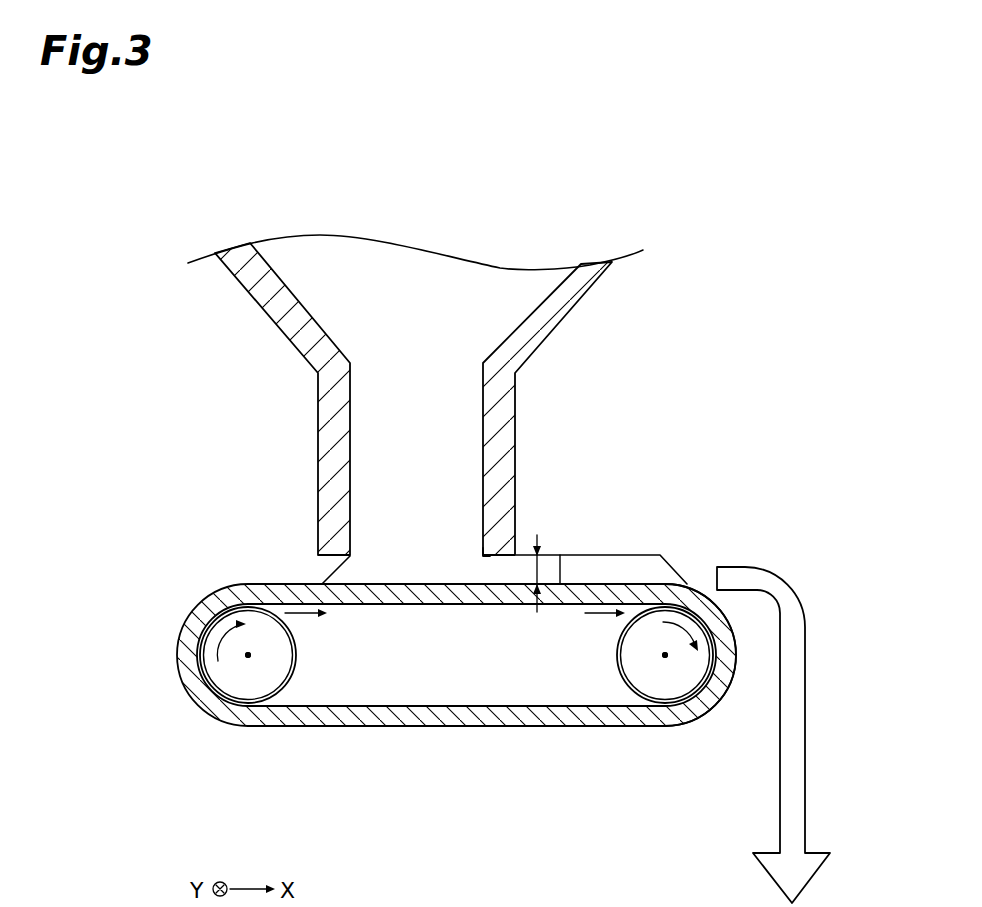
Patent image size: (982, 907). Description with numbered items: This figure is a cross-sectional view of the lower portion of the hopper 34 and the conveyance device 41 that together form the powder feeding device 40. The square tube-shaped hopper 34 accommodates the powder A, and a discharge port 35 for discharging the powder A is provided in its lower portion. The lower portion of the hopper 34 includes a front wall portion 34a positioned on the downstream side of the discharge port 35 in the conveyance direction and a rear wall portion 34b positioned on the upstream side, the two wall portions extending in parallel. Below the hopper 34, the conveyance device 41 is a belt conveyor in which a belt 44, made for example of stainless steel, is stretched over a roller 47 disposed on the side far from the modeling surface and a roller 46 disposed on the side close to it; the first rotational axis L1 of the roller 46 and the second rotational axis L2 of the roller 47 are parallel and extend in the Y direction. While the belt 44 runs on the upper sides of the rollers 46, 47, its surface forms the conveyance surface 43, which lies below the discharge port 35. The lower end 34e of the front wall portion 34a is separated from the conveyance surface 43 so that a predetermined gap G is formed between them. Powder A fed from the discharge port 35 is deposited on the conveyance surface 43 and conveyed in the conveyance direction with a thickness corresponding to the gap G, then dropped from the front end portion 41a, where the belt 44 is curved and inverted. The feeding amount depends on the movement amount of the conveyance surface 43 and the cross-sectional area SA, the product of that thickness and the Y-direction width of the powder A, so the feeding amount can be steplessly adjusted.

The hopper 34 is at (455, 454).
The front wall portion 34a is at (500, 527).
The rear wall portion 34b is at (328, 484).
The lower end of the front wall portion 34e is at (497, 560).
The discharge port 35 is at (484, 514).
The powder feeding device 40 is at (726, 378).
The conveyance device 41 is at (432, 629).
The front end portion 41a is at (746, 651).
The conveyance surface 43 is at (610, 583).
The belt 44 is at (247, 580).
The roller 46 is at (650, 677).
The roller 47 is at (267, 672).
The first rotational axis L1 is at (666, 658).
The second rotational axis L2 is at (247, 658).
The powder A is at (383, 585).
The gap G is at (538, 583).
The cross-sectional area SA is at (560, 558).